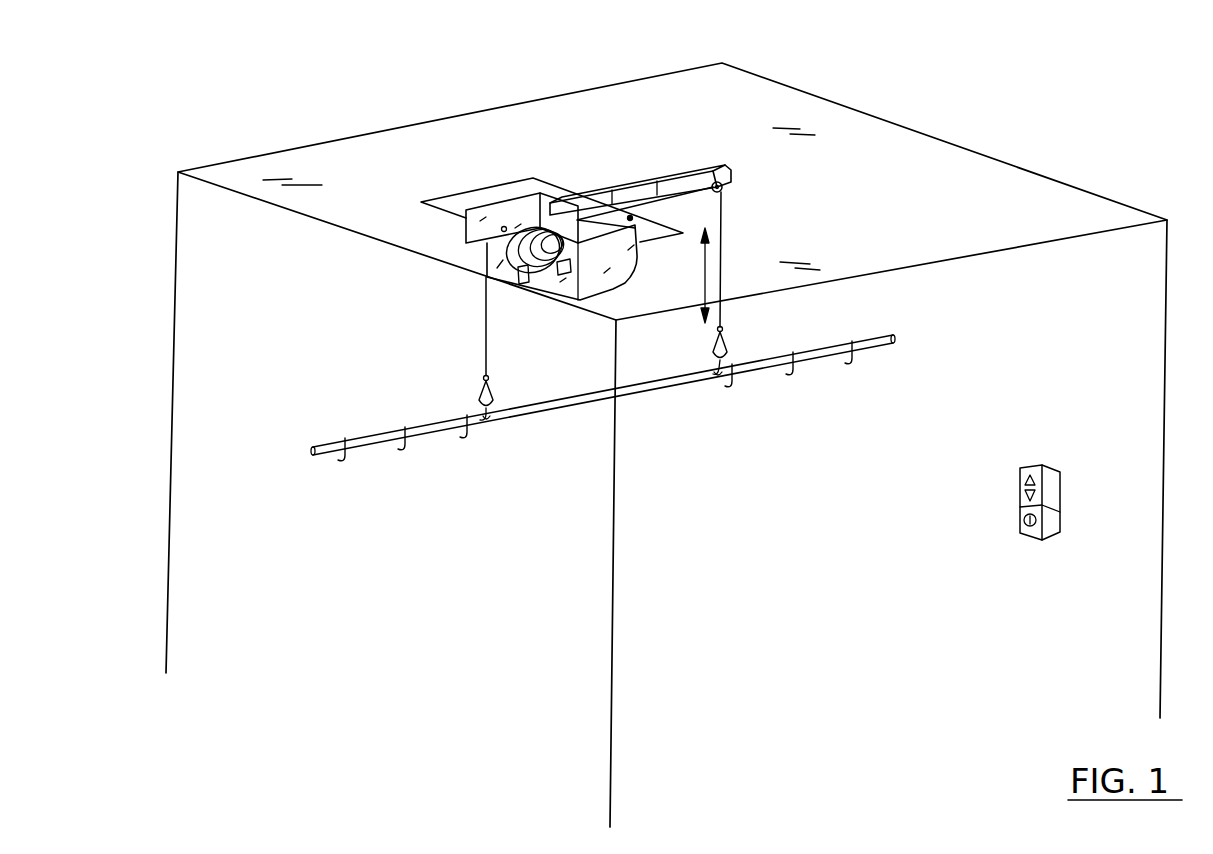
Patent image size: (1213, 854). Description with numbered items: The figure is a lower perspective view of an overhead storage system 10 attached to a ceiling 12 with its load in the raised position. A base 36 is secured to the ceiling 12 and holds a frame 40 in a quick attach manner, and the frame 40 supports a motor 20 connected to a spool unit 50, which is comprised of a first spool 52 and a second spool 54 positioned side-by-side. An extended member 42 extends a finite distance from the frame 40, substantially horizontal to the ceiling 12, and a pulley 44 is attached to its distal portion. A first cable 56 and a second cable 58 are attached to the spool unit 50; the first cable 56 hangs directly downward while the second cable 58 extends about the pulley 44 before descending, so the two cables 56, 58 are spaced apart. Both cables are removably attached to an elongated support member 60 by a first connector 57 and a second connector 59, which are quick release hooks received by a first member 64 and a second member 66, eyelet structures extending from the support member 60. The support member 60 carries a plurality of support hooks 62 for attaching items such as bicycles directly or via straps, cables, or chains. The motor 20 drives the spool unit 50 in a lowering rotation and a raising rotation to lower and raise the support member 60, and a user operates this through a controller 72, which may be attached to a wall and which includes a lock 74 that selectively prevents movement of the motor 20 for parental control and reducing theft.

The overhead storage system 10 is at (1080, 125).
The ceiling 12 is at (453, 128).
The motor 20 is at (564, 274).
The base 36 is at (465, 200).
The frame 40 is at (460, 222).
The extended member 42 is at (633, 187).
The pulley 44 is at (722, 183).
The spool unit 50 is at (458, 243).
The first spool 52 is at (490, 248).
The second spool 54 is at (535, 272).
The first cable 56 is at (485, 345).
The first connector 57 is at (476, 402).
The second cable 58 is at (723, 318).
The second connector 59 is at (710, 371).
The support member 60 is at (523, 412).
The support hooks 62 is at (345, 460).
The first member 64 is at (492, 408).
The second member 66 is at (723, 362).
The controller 72 is at (1017, 488).
The lock 74 is at (1018, 518).